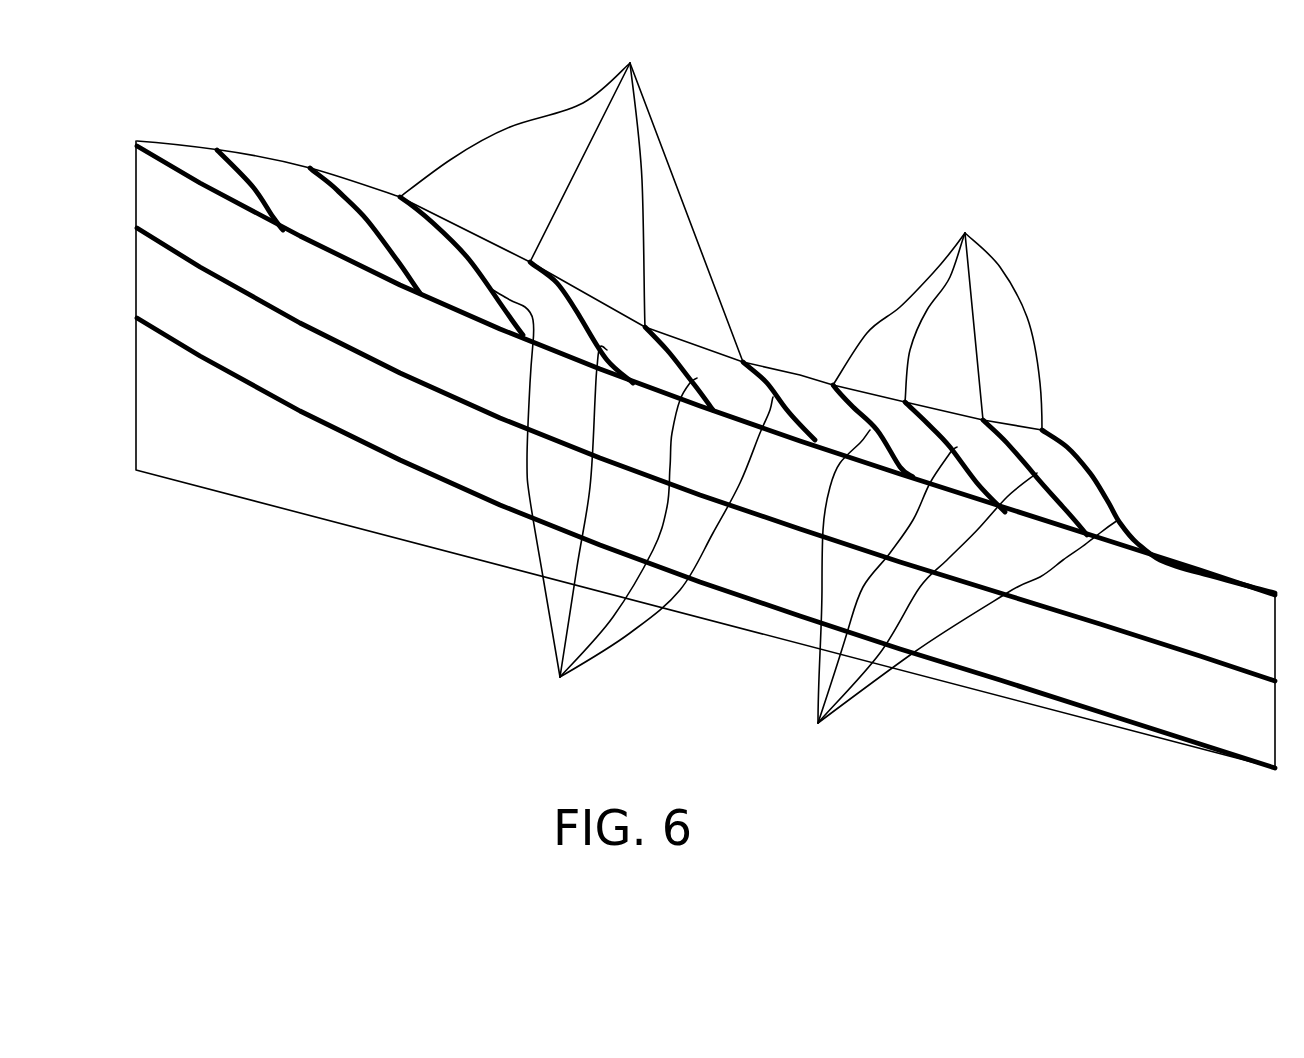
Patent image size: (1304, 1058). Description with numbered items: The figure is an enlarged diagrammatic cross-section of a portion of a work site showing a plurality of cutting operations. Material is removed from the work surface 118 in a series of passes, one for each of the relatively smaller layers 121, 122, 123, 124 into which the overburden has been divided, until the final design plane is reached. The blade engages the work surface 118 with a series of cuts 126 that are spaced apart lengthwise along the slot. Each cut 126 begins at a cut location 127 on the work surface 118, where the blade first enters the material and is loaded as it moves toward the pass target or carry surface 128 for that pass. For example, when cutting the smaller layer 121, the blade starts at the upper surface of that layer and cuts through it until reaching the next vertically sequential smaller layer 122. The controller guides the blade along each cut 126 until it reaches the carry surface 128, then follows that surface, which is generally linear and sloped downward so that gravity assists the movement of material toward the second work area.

The work surface 118 is at (274, 158).
The smaller layer 121 is at (210, 167).
The smaller layer 122 is at (165, 202).
The smaller layer 123 is at (160, 293).
The smaller layer 124 is at (167, 410).
The cut 126 is at (805, 527).
The cut location 127 is at (721, 230).
The carry surface 128 is at (362, 268).